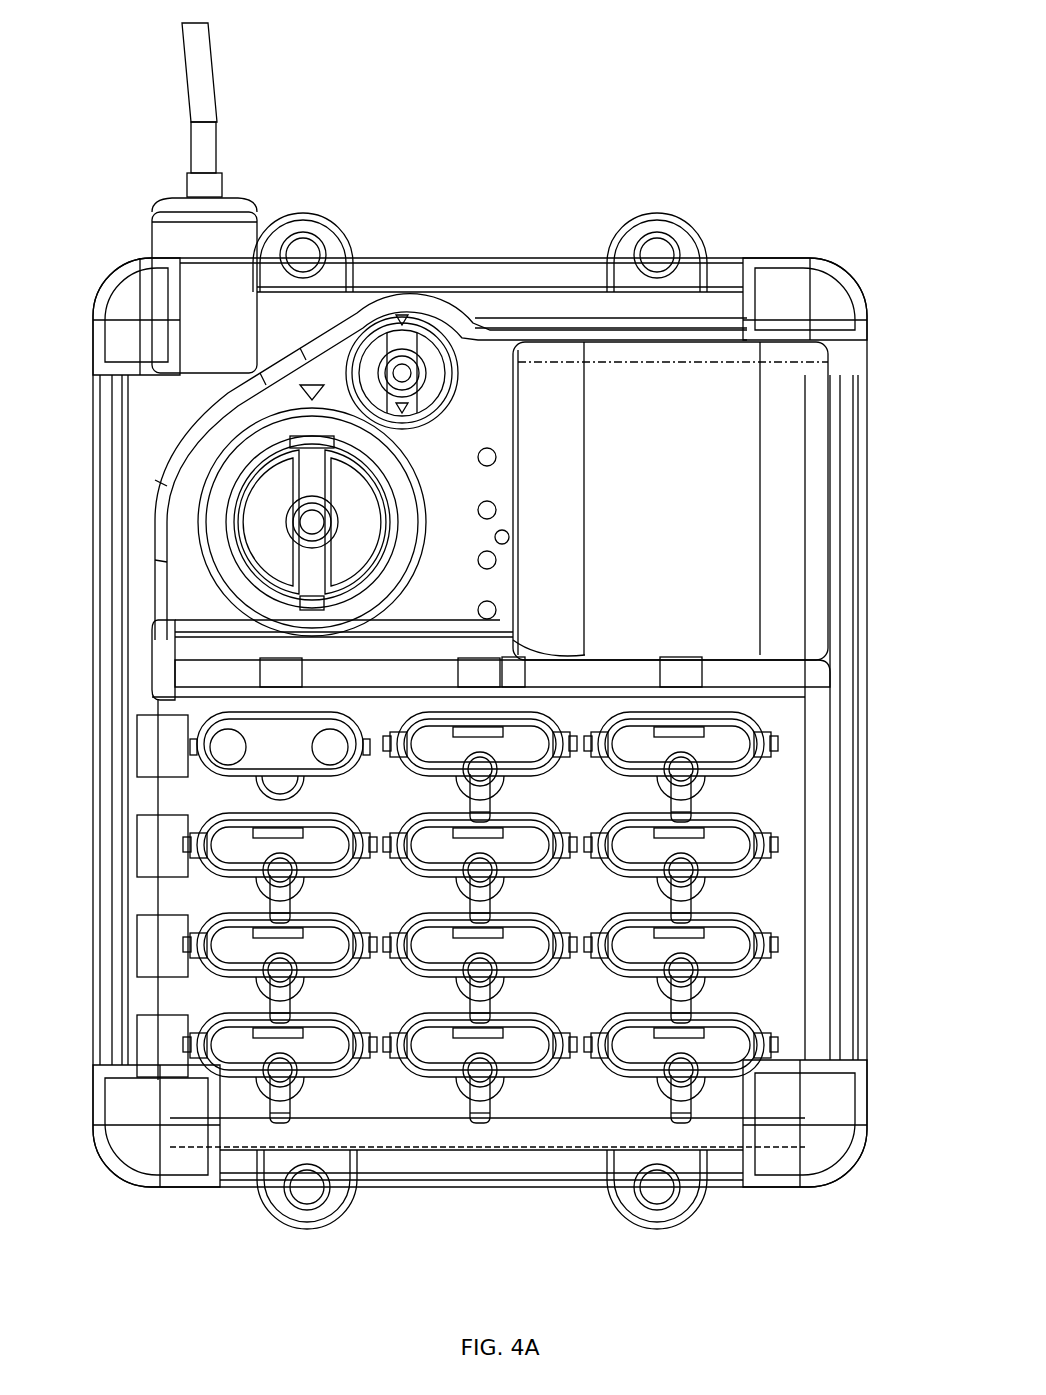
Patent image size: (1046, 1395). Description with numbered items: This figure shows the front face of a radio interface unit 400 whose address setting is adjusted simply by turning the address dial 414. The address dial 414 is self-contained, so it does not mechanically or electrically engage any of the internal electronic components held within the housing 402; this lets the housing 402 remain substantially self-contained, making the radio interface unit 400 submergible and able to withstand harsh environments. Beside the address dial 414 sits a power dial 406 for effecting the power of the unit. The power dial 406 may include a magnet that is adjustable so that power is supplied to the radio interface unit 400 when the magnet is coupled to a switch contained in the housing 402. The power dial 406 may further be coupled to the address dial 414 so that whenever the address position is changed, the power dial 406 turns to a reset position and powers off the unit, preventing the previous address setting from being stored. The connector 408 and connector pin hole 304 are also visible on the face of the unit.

The radio interface unit 400 is at (914, 31).
The housing 402 is at (869, 463).
The power dial 406 is at (456, 383).
The address dial 414 is at (196, 505).
The connector 408 is at (239, 780).
The connector pin hole 304 is at (313, 752).